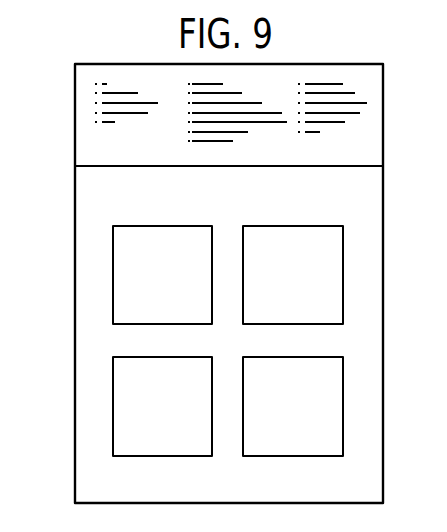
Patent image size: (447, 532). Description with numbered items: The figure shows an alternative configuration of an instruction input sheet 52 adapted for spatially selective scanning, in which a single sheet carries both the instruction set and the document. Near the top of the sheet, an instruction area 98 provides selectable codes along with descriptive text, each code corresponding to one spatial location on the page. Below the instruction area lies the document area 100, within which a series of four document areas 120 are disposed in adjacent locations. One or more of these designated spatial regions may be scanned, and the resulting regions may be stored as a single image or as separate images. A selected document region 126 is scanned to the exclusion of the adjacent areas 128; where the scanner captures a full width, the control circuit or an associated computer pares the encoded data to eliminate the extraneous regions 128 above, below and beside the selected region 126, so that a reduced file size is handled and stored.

The instruction area 98 is at (95, 108).
The instruction input sheet 52 is at (93, 152).
The adjacent areas 128 is at (97, 207).
The selected document region 126 is at (127, 258).
The document areas 120 is at (113, 297).
The document area 100 is at (98, 474).